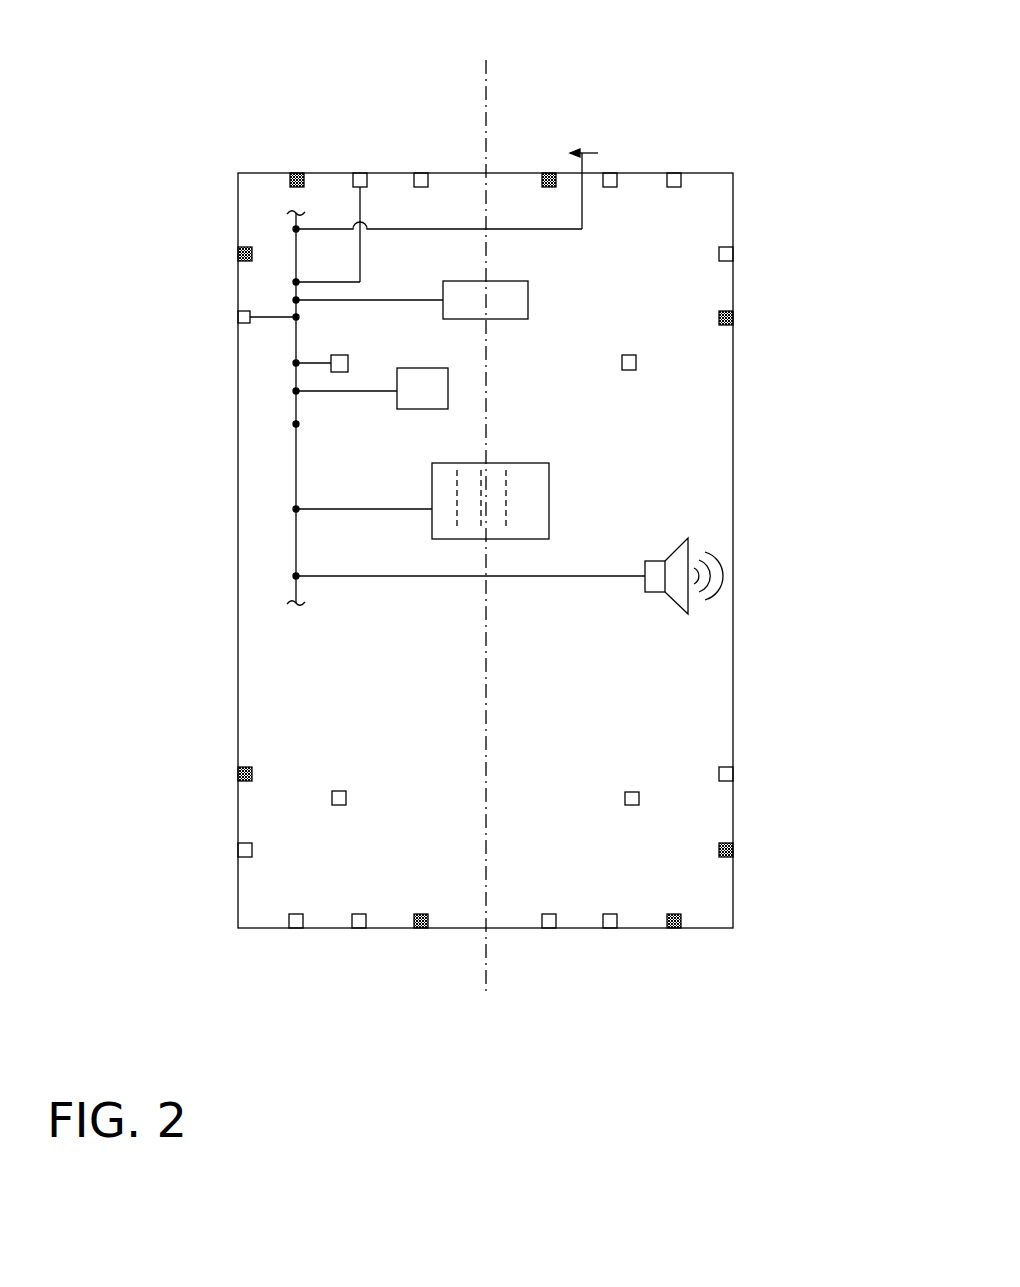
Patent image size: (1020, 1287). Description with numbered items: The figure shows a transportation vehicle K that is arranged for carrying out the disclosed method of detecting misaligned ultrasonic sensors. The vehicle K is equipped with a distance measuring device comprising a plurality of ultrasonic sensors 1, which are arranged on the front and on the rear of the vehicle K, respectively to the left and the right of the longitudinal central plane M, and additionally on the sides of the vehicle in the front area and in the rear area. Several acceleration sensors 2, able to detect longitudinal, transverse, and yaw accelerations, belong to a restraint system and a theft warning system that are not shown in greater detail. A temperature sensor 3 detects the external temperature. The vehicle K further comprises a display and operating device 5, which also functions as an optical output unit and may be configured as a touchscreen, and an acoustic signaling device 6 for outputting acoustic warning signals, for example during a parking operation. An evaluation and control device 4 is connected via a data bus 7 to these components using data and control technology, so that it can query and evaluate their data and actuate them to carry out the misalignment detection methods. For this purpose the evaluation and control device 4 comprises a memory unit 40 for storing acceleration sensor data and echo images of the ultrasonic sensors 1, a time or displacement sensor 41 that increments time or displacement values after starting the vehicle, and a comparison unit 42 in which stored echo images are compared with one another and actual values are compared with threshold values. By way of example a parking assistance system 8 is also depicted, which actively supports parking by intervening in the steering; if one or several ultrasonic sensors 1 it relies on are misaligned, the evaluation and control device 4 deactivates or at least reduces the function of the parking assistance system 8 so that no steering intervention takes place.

The transportation vehicle K is at (756, 143).
The longitudinal central plane M is at (486, 83).
The ultrasonic sensors 1 is at (243, 767).
The acceleration sensors 2 is at (347, 360).
The temperature sensor 3 is at (582, 150).
The evaluation and control device 4 is at (397, 559).
The memory unit 40 is at (445, 517).
The time or displacement sensor 41 is at (467, 517).
The comparison unit 42 is at (494, 517).
The display and operating device 5 is at (528, 300).
The acoustic signaling device 6 is at (677, 603).
The data bus 7 is at (296, 424).
The parking assistance system 8 is at (410, 407).